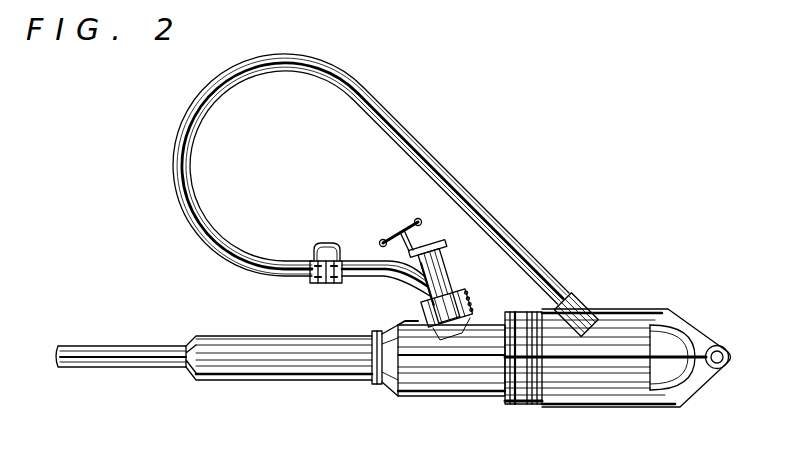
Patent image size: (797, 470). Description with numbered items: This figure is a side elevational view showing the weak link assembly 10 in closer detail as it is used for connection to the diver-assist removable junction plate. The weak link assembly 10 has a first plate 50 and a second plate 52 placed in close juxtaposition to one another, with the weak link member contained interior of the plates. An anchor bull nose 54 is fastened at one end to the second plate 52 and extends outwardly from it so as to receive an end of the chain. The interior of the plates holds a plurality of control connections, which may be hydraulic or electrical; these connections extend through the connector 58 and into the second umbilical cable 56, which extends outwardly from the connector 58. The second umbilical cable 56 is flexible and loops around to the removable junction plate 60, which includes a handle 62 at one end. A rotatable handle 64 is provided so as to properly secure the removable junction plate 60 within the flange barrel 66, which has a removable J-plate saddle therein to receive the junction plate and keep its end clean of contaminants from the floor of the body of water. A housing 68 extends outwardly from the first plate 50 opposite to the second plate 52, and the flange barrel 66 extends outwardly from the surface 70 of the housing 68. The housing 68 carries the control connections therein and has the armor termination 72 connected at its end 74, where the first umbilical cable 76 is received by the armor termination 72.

The weak link assembly 10 is at (450, 121).
The first plate 50 is at (510, 410).
The second plate 52 is at (533, 409).
The anchor bull nose 54 is at (670, 312).
The second umbilical cable 56 is at (488, 213).
The connector 58 is at (580, 294).
The removable junction plate 60 is at (447, 273).
The handle 62 is at (323, 238).
The rotatable handle 64 is at (400, 221).
The flange barrel 66 is at (470, 300).
The housing 68 is at (453, 398).
The surface 70 is at (407, 325).
The armor termination 72 is at (268, 382).
The end 74 is at (377, 388).
The first umbilical cable 76 is at (110, 347).